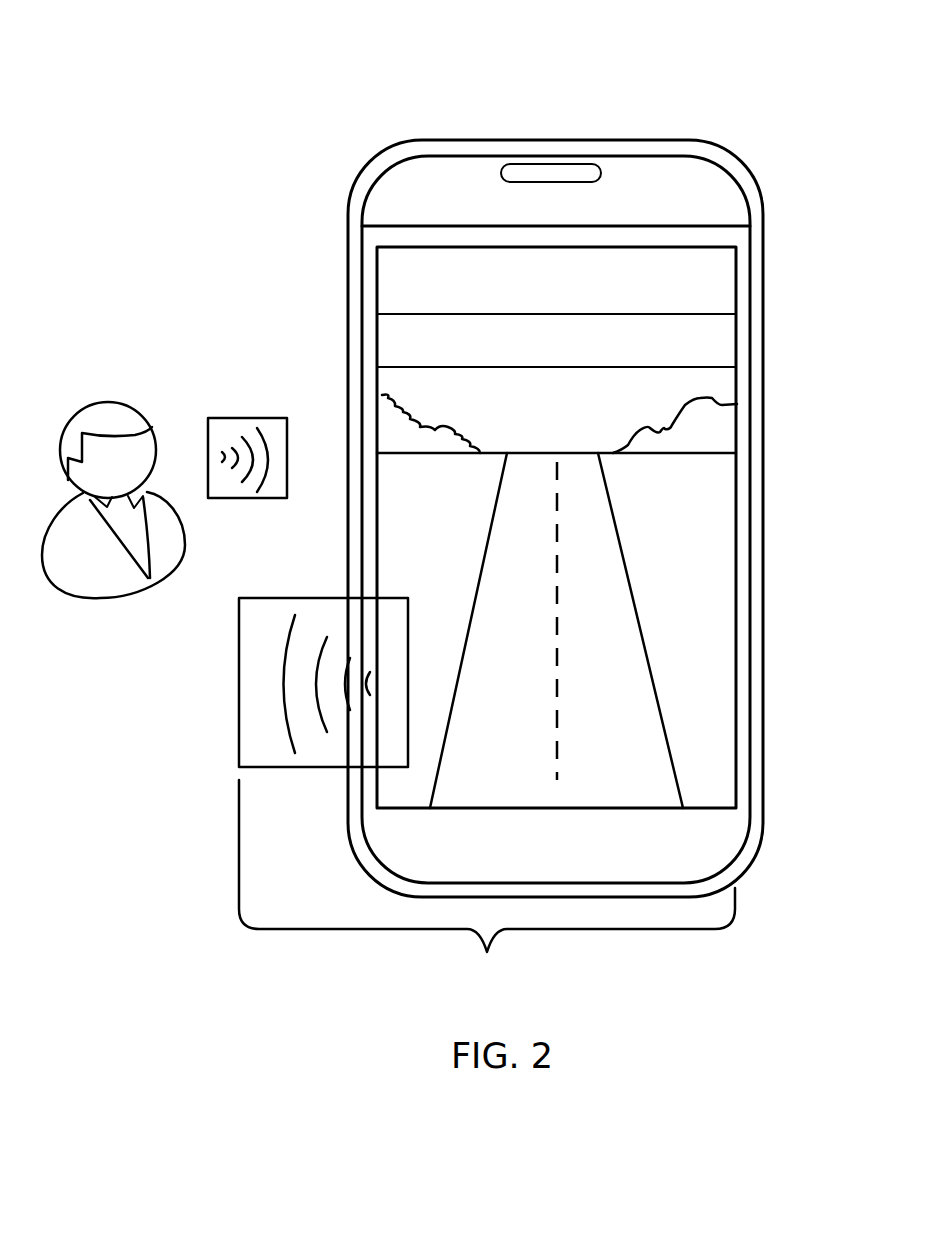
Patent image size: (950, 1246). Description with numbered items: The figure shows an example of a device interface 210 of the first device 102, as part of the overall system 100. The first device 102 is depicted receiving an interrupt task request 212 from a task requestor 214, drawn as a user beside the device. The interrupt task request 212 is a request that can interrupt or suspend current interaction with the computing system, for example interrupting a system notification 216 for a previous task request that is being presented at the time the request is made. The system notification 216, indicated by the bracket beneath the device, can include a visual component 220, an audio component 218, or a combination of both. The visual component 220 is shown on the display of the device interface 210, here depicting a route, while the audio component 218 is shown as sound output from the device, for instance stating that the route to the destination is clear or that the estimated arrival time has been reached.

The system 100 is at (290, 52).
The first device 102 is at (576, 123).
The device interface 210 is at (718, 238).
The interrupt task request 212 is at (248, 418).
The task requestor 214 is at (106, 378).
The system notification 216 is at (487, 888).
The audio component 218 is at (239, 682).
The visual component 220 is at (736, 730).